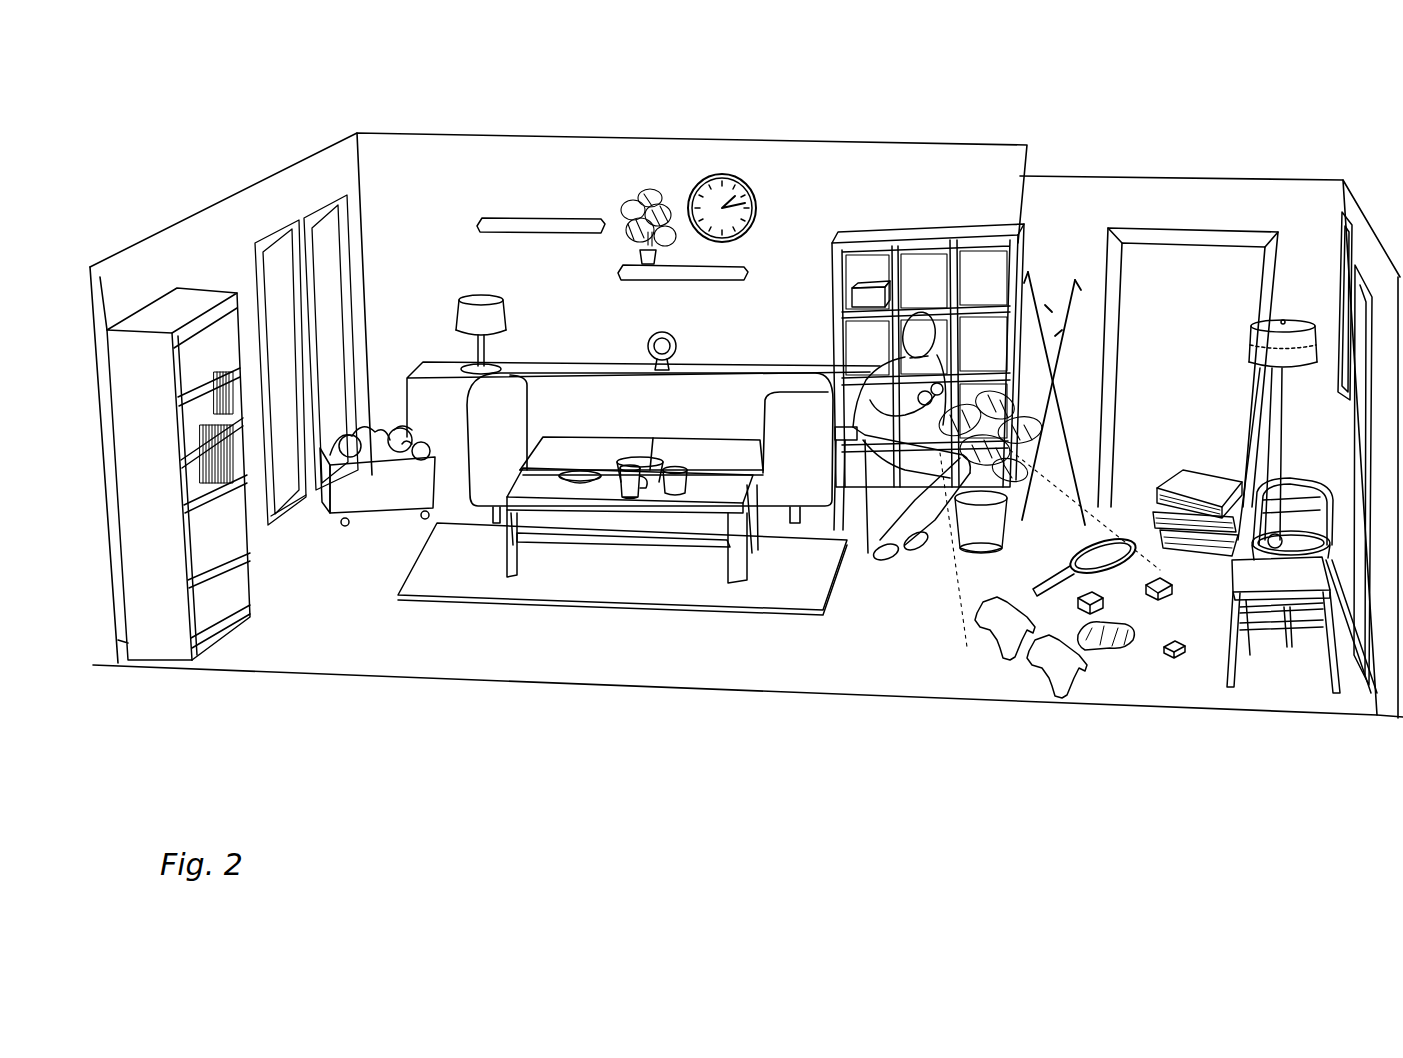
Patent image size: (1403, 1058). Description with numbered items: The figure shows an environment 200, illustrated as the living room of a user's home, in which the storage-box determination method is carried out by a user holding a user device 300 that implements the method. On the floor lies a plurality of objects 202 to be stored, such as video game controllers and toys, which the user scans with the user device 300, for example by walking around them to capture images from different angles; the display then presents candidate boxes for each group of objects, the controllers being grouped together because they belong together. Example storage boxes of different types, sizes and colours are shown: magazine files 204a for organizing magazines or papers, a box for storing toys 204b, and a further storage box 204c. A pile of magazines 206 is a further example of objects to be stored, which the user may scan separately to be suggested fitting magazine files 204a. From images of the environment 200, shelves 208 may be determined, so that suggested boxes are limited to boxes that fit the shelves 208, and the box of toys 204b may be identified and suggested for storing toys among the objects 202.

The environment 200 is at (214, 99).
The plurality of objects 202 is at (1116, 680).
The magazine files 204a is at (213, 470).
The box for storing toys 204b is at (383, 512).
The storage box 204c is at (872, 287).
The pile of magazines 206 is at (1178, 486).
The shelves 208 is at (168, 322).
The user device 300 is at (949, 334).